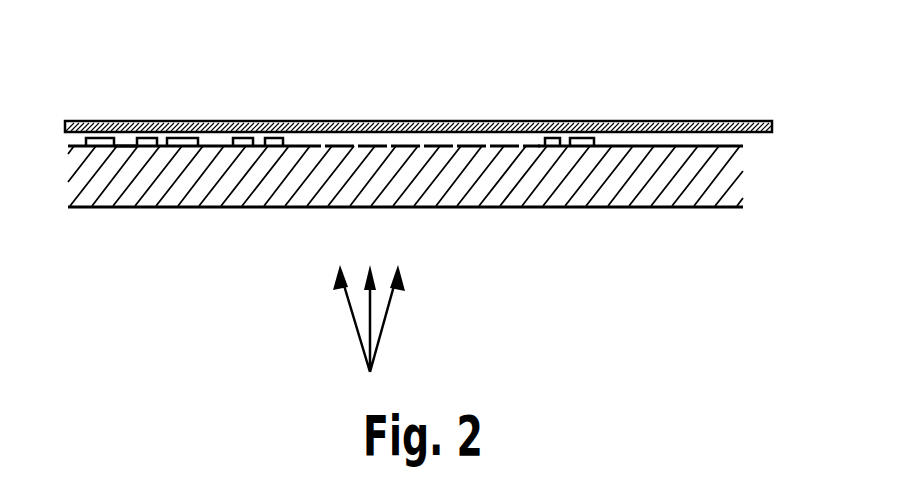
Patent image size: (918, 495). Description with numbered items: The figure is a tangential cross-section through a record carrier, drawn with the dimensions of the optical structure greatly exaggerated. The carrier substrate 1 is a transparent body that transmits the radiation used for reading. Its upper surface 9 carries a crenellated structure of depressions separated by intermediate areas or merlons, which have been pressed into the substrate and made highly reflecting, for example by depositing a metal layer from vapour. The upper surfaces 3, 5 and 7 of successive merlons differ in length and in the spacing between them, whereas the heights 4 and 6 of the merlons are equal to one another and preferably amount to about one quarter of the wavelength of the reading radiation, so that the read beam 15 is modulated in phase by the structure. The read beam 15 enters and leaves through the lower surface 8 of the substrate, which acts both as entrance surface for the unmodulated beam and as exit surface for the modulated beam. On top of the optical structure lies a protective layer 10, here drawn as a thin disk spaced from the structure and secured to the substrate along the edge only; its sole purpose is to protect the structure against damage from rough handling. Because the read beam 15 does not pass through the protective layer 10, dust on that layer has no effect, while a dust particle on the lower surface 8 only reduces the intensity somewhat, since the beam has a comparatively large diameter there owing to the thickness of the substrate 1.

The carrier substrate 1 is at (704, 183).
The upper surface of merlon 3 is at (99, 141).
The height of merlon 4 is at (120, 137).
The upper surface of merlon 5 is at (145, 141).
The height of merlon 6 is at (166, 134).
The upper surface of merlon 7 is at (185, 141).
The lower surface of substrate 8 is at (638, 208).
The upper surface of substrate 9 is at (733, 144).
The protective layer 10 is at (708, 120).
The read beam 15 is at (378, 318).